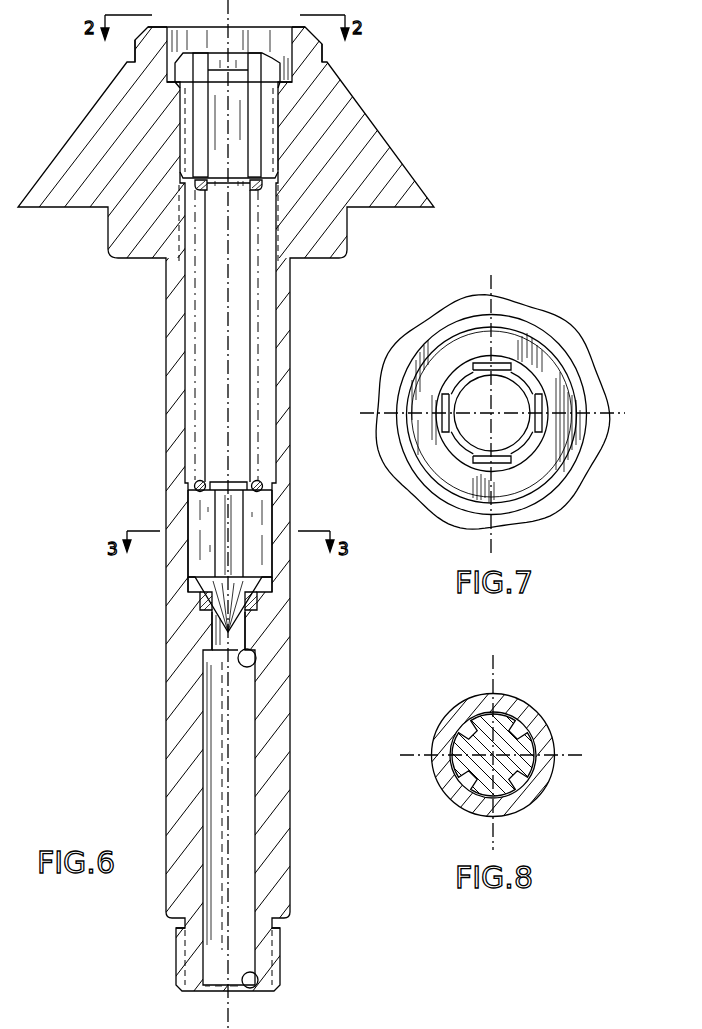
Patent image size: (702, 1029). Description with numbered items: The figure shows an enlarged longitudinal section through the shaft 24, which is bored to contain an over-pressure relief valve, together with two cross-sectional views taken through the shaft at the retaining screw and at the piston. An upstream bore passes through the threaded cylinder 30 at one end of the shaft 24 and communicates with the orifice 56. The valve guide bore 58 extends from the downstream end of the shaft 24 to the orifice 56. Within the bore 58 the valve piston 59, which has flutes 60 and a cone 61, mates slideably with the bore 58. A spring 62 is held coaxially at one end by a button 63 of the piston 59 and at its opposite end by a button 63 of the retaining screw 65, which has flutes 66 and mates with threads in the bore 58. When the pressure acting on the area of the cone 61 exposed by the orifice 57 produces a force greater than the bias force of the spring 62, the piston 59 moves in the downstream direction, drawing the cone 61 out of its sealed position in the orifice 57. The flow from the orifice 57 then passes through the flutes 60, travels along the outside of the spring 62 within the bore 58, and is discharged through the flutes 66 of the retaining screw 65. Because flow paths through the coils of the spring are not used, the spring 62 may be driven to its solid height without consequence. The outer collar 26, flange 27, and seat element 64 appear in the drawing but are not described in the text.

In FIG. 6, the shaft 24 is at (291, 762).
In FIG. 8, the shaft 24 is at (529, 704).
In FIG. 6, the collar 26 is at (418, 195).
In FIG. 7, the collar 26 is at (583, 483).
In FIG. 6, the flange 27 is at (322, 58).
In FIG. 7, the flange 27 is at (590, 452).
In FIG. 6, the threaded cylinder 30 is at (281, 950).
In FIG. 6, the orifice 56 is at (252, 986).
In FIG. 6, the orifice 57 is at (257, 657).
In FIG. 6, the valve guide bore 58 is at (268, 461).
In FIG. 6, the valve piston 59 is at (277, 566).
In FIG. 8, the valve piston 59 is at (538, 748).
In FIG. 6, the flutes 60 is at (200, 563).
In FIG. 8, the flutes 60 is at (530, 732).
In FIG. 6, the cone 61 is at (252, 603).
In FIG. 6, the spring 62 is at (258, 486).
In FIG. 6, the button 63 is at (206, 480).
In FIG. 6, the spring seat 64 is at (240, 187).
In FIG. 6, the retaining screw 65 is at (283, 137).
In FIG. 7, the retaining screw 65 is at (553, 407).
In FIG. 6, the flutes 66 is at (258, 165).
In FIG. 7, the flutes 66 is at (522, 382).